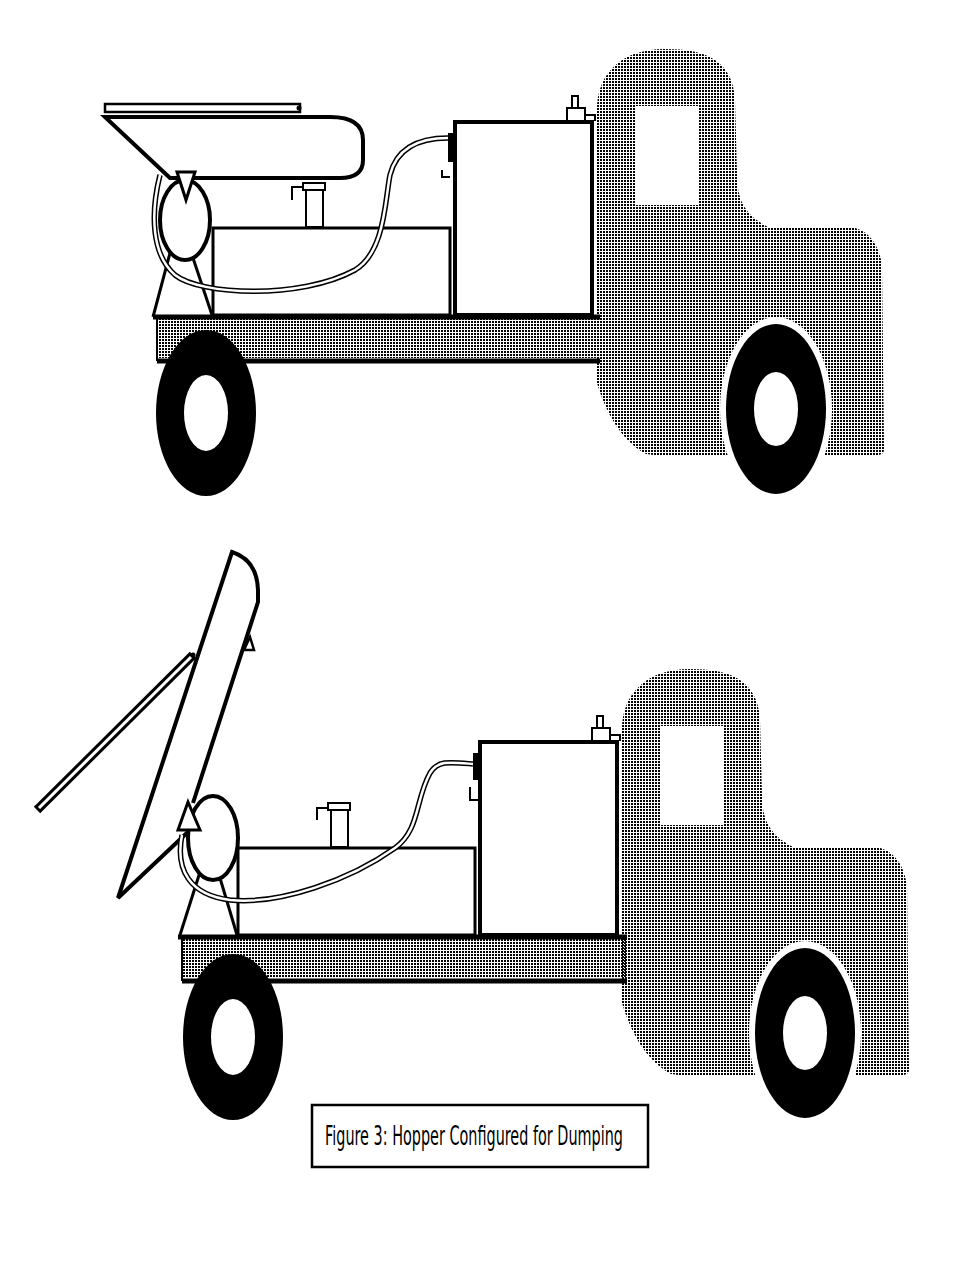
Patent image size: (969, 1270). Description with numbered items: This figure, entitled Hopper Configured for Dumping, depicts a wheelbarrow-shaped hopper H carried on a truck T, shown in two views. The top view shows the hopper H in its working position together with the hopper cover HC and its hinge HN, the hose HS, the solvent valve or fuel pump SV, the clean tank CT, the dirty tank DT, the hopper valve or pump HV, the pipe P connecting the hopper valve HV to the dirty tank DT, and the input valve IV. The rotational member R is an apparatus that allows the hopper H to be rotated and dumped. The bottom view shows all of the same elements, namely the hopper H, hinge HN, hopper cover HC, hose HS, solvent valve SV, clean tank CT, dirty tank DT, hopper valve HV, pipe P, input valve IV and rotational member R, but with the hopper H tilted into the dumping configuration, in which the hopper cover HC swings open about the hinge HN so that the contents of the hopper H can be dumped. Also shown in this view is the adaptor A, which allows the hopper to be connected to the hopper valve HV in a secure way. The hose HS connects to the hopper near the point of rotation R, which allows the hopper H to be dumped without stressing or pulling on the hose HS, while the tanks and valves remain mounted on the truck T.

The hopper H is at (342, 112).
The hopper cover HC is at (113, 104).
The hinge HN is at (298, 105).
The adaptor A is at (252, 639).
The rotational member R is at (185, 218).
The pipe P is at (303, 220).
The hopper valve HV is at (325, 189).
The hose HS is at (400, 147).
The solvent valve SV is at (450, 133).
The clean tank CT is at (478, 120).
The input valve IV is at (570, 110).
The dirty tank DT is at (375, 282).
The truck T is at (632, 362).